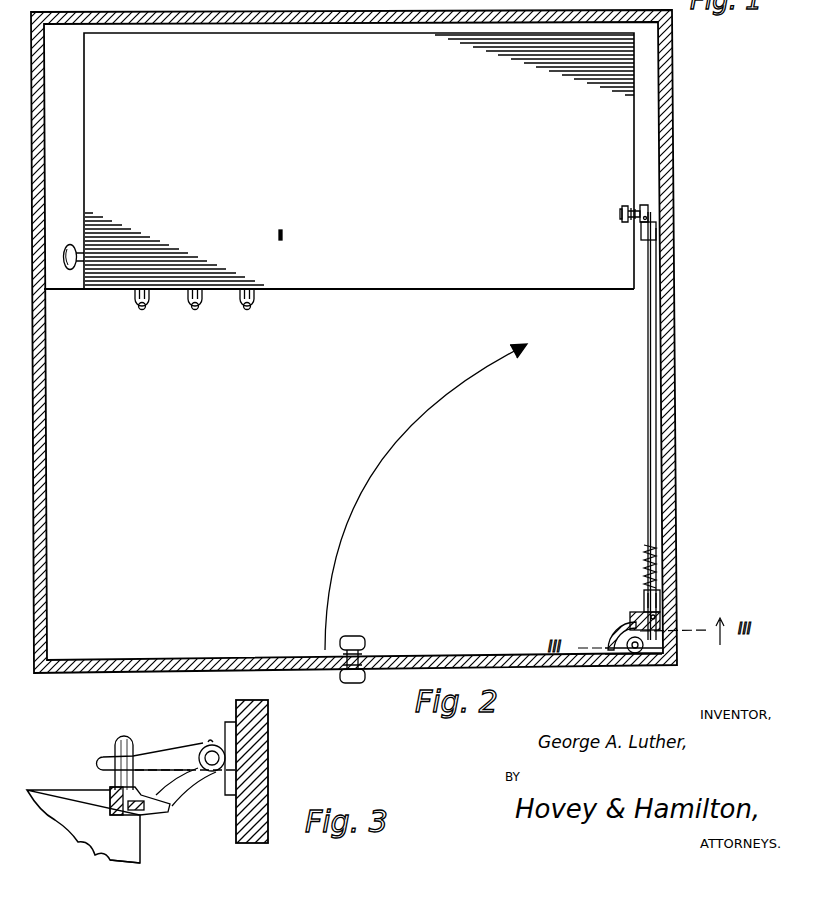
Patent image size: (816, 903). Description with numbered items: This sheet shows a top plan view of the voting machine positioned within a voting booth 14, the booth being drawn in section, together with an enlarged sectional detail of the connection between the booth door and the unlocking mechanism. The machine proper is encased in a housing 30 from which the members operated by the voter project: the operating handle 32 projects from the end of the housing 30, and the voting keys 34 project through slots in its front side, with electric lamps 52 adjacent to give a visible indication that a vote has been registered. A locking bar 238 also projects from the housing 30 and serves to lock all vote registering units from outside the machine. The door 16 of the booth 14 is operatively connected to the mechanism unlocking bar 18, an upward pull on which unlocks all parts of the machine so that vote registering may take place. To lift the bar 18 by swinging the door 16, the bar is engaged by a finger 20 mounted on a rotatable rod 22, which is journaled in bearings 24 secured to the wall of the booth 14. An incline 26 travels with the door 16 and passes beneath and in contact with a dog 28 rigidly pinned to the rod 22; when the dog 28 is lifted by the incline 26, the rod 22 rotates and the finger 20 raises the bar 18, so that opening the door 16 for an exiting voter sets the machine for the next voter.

In FIG. 2, the voting booth 14 is at (662, 468).
In FIG. 3, the voting booth 14 is at (260, 722).
In FIG. 2, the door 16 is at (428, 655).
In FIG. 2, the mechanism unlocking bar 18 is at (628, 222).
In FIG. 3, the mechanism unlocking bar 18 is at (115, 745).
In FIG. 2, the finger 20 is at (638, 205).
In FIG. 3, the finger 20 is at (143, 758).
In FIG. 2, the rotatable rod 22 is at (648, 212).
In FIG. 3, the rotatable rod 22 is at (205, 745).
In FIG. 2, the bearings 24 is at (651, 232).
In FIG. 3, the bearings 24 is at (236, 772).
In FIG. 2, the incline 26 is at (618, 625).
In FIG. 3, the incline 26 is at (154, 815).
In FIG. 2, the dog 28 is at (637, 612).
In FIG. 3, the dog 28 is at (178, 790).
In FIG. 2, the housing 30 is at (339, 161).
In FIG. 3, the housing 30 is at (83, 826).
In FIG. 2, the operating handle 32 is at (70, 243).
In FIG. 2, the voting keys 34 is at (145, 306).
In FIG. 2, the electric lamp 52 is at (137, 300).
In FIG. 2, the locking bar 238 is at (283, 235).